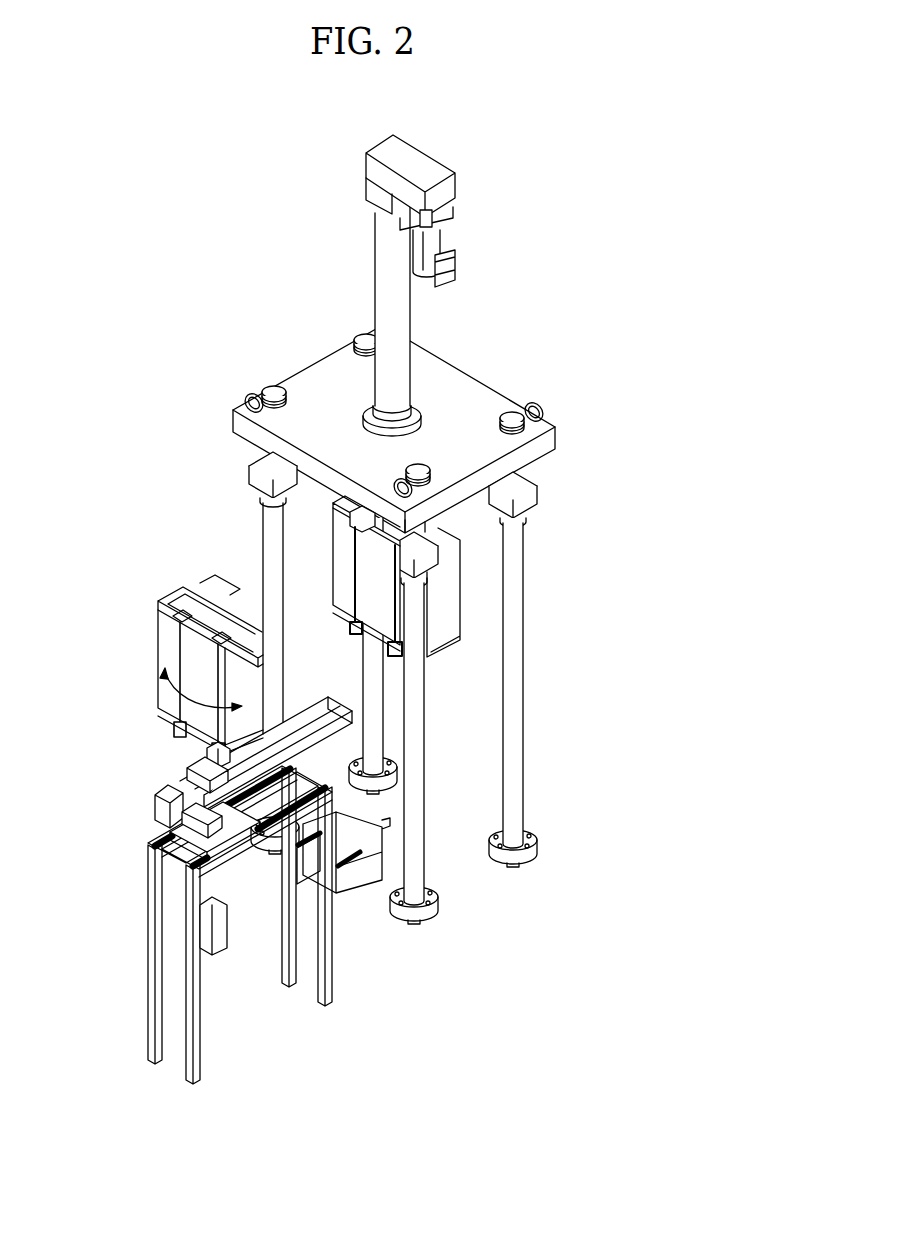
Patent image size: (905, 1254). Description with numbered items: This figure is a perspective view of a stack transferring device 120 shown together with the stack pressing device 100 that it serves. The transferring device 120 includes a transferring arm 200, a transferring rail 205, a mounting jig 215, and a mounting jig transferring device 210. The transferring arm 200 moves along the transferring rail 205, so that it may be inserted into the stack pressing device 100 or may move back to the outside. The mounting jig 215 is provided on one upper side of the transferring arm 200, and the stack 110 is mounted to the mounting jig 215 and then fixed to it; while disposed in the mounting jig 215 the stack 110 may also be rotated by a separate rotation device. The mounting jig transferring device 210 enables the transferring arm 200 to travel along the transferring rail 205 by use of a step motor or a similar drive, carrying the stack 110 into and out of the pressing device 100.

The stack pressing device 100 is at (494, 370).
The stack 110 is at (286, 678).
The transferring device 120 is at (113, 726).
The transferring arm 200 is at (313, 718).
The transferring rail 205 is at (153, 832).
The mounting jig transferring device 210 is at (217, 765).
The mounting jig 215 is at (165, 807).